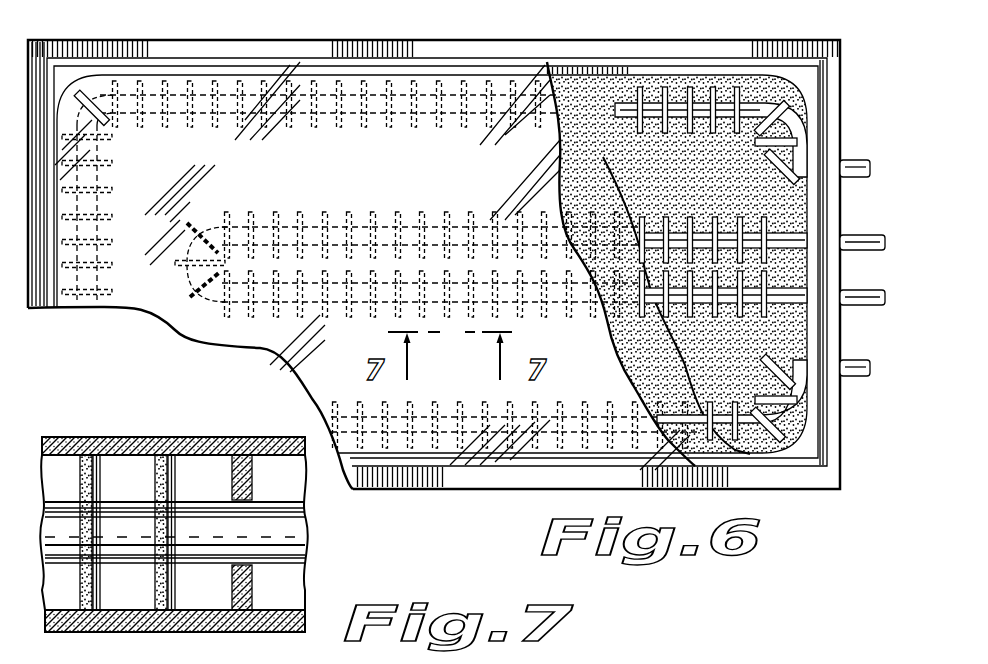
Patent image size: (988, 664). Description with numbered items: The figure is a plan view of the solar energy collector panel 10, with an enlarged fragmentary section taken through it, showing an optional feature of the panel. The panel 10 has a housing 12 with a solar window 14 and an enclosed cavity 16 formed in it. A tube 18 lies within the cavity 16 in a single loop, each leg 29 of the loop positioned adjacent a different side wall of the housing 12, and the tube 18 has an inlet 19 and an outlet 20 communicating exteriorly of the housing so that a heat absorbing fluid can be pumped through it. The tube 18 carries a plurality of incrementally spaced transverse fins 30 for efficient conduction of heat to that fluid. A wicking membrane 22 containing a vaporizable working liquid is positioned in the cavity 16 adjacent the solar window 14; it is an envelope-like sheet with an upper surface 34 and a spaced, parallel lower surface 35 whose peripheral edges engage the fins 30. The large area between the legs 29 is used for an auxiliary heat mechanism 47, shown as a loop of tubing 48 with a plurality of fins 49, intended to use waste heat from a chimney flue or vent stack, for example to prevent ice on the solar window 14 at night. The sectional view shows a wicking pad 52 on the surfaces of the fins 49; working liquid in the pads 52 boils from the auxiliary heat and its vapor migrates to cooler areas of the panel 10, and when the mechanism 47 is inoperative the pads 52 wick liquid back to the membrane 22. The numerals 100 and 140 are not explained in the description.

In FIG. 6, the solar energy collector panel 10 is at (306, 37).
In FIG. 6, the housing 12 is at (372, 56).
In FIG. 6, the solar window 14 is at (549, 64).
In FIG. 6, the cavity 16 is at (585, 80).
In FIG. 6, the tube 18 is at (682, 104).
In FIG. 6, the inlet 19 is at (853, 161).
In FIG. 6, the outlet 20 is at (858, 374).
In FIG. 6, the wicking membrane 22 is at (605, 154).
In FIG. 7, the wicking membrane 22 is at (82, 437).
In FIG. 6, the leg 29 is at (110, 170).
In FIG. 6, the transverse fins 30 is at (710, 98).
In FIG. 7, the upper surface 34 is at (130, 440).
In FIG. 7, the lower surface 35 is at (128, 618).
In FIG. 6, the auxiliary heat mechanism 47 is at (291, 210).
In FIG. 6, the loop of tubing 48 is at (782, 170).
In FIG. 7, the loop of tubing 48 is at (292, 535).
In FIG. 6, the fins 49 is at (740, 217).
In FIG. 7, the fins 49 is at (272, 440).
In FIG. 7, the wicking pad 52 is at (222, 454).
In FIG. 6, the assembly (cut off) 100 is at (831, 659).
In FIG. 7, the assembly (cut off) 140 is at (231, 659).